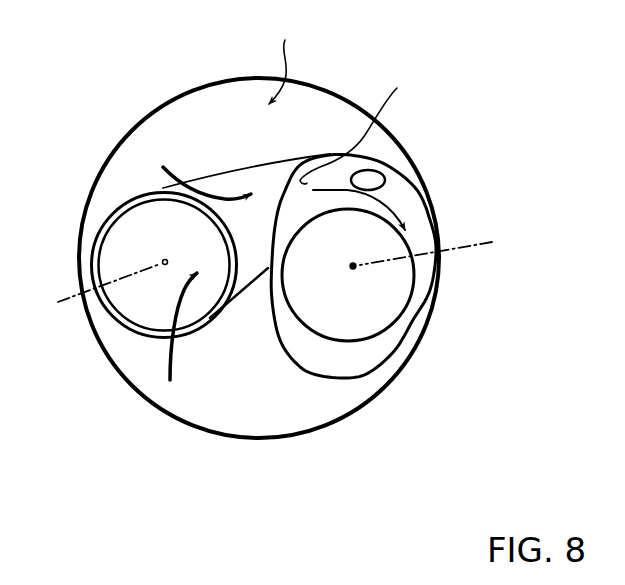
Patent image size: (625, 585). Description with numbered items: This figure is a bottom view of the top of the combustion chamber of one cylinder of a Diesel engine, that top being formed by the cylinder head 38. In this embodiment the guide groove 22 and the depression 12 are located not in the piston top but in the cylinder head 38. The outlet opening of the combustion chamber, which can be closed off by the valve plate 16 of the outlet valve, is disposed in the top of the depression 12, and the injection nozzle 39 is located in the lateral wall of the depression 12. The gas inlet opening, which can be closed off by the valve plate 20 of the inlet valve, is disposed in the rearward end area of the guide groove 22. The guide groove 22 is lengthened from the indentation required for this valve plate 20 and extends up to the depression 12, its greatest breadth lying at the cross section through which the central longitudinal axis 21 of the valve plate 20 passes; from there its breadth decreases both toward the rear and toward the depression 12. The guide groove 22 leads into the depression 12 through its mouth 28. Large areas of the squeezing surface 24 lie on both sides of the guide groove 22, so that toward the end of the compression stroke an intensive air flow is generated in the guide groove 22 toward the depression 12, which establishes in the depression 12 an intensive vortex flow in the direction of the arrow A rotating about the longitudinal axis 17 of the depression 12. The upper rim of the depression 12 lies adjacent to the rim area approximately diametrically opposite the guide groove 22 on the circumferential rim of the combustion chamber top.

The depression 12 is at (300, 345).
The valve plate of the outlet valve 16 is at (393, 292).
The central longitudinal axis of the depression 17 is at (439, 248).
The valve plate of the inlet valve 20 is at (132, 218).
The central longitudinal axis of the valve plate 21 is at (95, 285).
The guide groove 22 is at (213, 182).
The squeezing surface 24 is at (310, 102).
The mouth 28 is at (366, 130).
The cylinder head 38 is at (289, 59).
The injection nozzle 39 is at (373, 178).
The arrow A is at (388, 203).